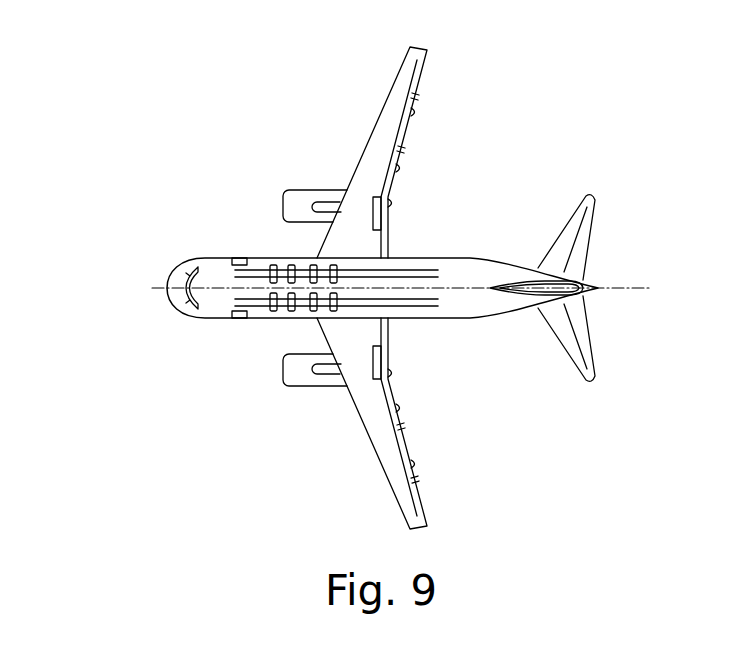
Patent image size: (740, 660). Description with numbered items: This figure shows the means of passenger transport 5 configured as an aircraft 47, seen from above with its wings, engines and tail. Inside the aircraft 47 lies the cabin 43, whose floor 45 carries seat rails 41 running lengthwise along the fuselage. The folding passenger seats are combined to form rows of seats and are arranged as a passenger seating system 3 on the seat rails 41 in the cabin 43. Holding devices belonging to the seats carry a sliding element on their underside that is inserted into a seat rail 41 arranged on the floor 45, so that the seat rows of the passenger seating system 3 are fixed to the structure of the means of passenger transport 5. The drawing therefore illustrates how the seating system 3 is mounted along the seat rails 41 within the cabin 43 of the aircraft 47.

The aircraft 47 is at (143, 244).
The means of passenger transport 5 is at (178, 338).
The floor 45 is at (463, 274).
The seat rail 41 is at (408, 274).
The cabin 43 is at (285, 268).
The passenger seating system 3 is at (287, 308).